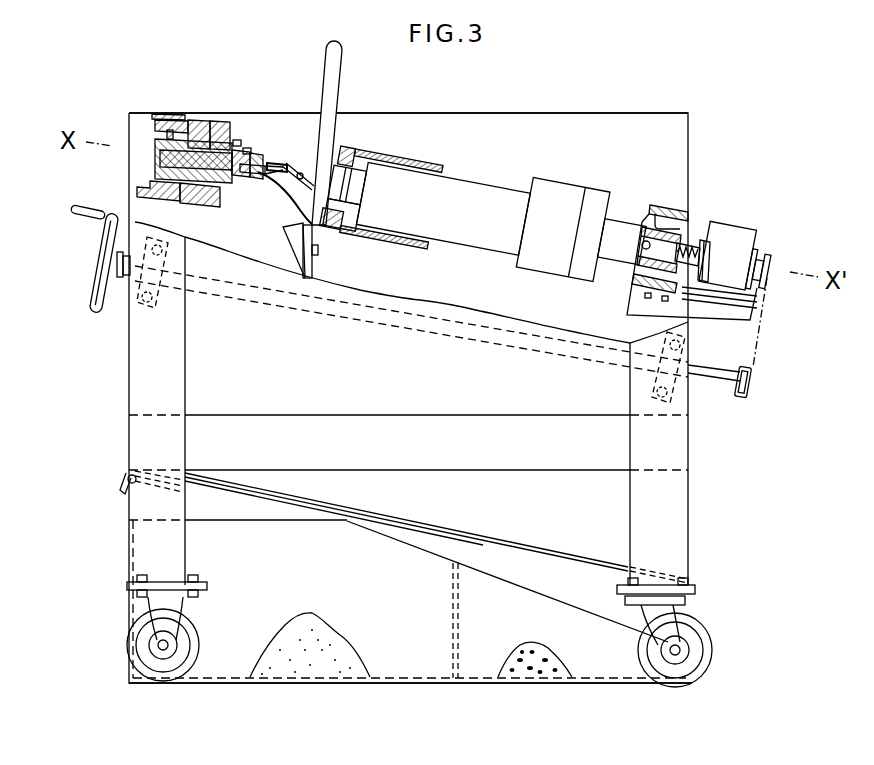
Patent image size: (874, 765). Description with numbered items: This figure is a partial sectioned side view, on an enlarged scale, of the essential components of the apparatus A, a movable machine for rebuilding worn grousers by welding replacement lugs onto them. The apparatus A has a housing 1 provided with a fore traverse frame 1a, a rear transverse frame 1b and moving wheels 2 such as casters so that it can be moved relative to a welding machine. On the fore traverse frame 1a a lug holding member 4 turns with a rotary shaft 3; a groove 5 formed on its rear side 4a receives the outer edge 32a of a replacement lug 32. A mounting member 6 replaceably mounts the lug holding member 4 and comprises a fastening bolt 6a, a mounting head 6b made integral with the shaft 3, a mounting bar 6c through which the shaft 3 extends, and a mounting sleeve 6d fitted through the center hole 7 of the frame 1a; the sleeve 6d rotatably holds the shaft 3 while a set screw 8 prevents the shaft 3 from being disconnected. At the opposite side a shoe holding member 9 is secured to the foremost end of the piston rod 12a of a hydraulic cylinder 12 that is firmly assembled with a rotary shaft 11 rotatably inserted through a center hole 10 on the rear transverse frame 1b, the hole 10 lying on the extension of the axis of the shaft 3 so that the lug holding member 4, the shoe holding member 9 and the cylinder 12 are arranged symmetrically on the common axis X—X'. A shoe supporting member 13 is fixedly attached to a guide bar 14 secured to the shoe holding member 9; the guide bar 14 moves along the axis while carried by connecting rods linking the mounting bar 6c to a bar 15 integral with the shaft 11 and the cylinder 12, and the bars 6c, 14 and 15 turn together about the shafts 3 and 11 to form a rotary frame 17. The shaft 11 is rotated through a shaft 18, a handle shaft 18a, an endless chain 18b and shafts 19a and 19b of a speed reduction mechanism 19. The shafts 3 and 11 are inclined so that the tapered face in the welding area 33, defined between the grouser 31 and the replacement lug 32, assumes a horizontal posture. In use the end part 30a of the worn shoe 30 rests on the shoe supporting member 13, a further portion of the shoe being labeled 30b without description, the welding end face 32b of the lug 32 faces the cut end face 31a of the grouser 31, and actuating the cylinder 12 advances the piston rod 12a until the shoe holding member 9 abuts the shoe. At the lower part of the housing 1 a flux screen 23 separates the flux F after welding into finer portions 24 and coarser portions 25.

The housing 1 is at (128, 384).
The fore traverse frame 1a is at (163, 130).
The rear transverse frame 1b is at (668, 210).
The moving wheels 2 is at (205, 650).
The rotary shaft 3 is at (210, 190).
The lug holding member 4 is at (243, 196).
The rear side 4a is at (267, 164).
The groove 5 is at (257, 182).
The mounting member 6 is at (228, 147).
The fastening bolt 6a is at (238, 186).
The mounting head 6b is at (215, 125).
The mounting bar 6c is at (203, 120).
The mounting sleeve 6d is at (150, 178).
The center hole 7 is at (183, 190).
The set screw 8 is at (166, 132).
The shoe holding member 9 is at (331, 165).
The center hole 10 is at (686, 228).
The rotary shaft 11 is at (642, 247).
The hydraulic cylinder 12 is at (490, 185).
The piston rod 12a is at (358, 158).
The shoe supporting member 13 is at (296, 252).
The guide bar 14 is at (430, 152).
The bar 15 is at (553, 180).
The rotary frame 17 is at (413, 252).
The shaft 18 is at (93, 315).
The handle shaft 18a is at (426, 330).
The endless chain 18b is at (760, 342).
The speed reduction mechanism 19 is at (740, 232).
The shaft 19a is at (772, 250).
The shaft 19b is at (698, 240).
The flux screen 23 is at (390, 518).
The finer portions 24 is at (390, 660).
The coarser portions 25 is at (483, 652).
The worn shoe 30 is at (340, 62).
The end part 30a is at (303, 278).
The lever bracket 30b is at (363, 212).
The grouser 31 is at (298, 172).
The cut end face 31a is at (290, 165).
The replacement lug 32 is at (247, 155).
The outer edge 32a is at (237, 160).
The welding end face 32b is at (290, 221).
The welding area 33 is at (287, 168).
The apparatus A is at (636, 113).
The flux F is at (280, 665).